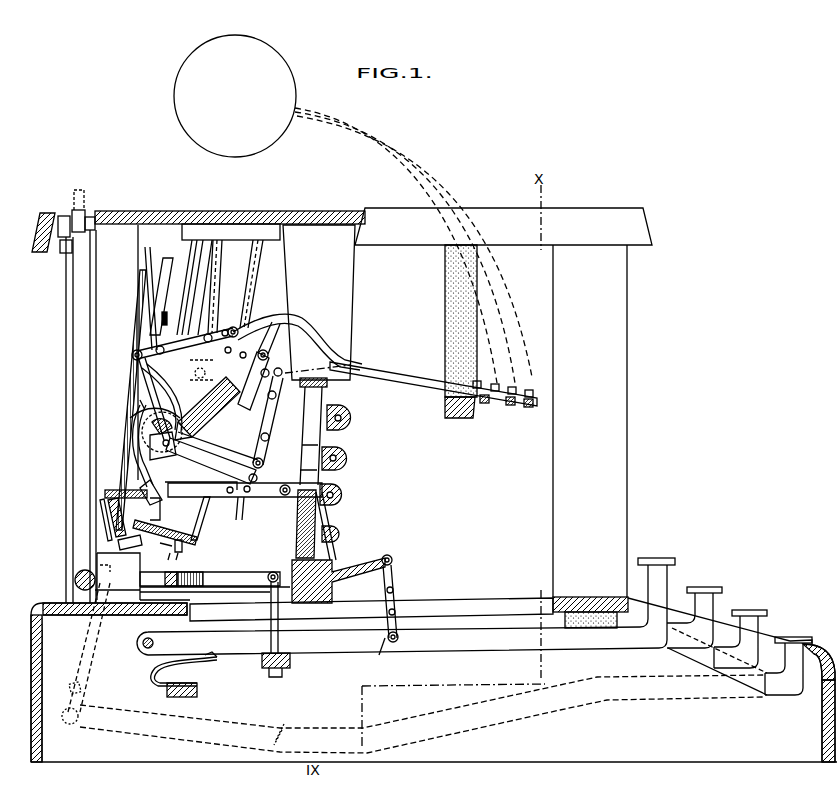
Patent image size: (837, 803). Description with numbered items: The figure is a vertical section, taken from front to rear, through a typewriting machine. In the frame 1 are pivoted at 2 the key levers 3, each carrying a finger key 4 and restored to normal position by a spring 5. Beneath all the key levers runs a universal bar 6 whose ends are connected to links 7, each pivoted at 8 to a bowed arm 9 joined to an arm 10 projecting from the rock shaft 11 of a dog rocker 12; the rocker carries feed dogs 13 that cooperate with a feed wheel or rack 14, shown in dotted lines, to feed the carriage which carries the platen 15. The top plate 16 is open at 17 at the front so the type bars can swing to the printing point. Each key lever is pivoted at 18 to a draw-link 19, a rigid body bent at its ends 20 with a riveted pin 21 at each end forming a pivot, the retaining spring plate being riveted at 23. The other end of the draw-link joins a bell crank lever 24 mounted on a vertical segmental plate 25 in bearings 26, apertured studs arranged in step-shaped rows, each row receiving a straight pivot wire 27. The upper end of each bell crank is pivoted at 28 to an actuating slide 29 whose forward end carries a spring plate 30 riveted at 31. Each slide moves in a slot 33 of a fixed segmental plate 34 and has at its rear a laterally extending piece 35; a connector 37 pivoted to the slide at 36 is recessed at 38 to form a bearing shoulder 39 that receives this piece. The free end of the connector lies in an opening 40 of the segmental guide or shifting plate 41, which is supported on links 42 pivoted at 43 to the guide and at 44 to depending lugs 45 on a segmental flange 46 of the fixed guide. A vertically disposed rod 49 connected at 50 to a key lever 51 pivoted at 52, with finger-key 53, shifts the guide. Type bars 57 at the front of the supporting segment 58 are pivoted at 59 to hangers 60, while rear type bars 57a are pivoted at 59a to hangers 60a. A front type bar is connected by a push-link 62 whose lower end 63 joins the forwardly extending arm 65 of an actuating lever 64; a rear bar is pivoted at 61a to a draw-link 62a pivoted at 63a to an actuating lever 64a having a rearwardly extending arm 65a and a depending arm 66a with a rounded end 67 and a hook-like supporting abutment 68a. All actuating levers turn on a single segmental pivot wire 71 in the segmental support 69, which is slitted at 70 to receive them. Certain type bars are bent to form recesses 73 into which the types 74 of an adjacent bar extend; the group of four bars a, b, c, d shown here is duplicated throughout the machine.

The frame 1 is at (32, 668).
The pivot 2 is at (143, 650).
The key levers 3 is at (490, 640).
The finger keys 4 is at (660, 558).
The spring 5 is at (194, 668).
The universal bar 6 is at (288, 664).
The links 7 is at (270, 625).
The pivot 8 is at (273, 571).
The bowed arm 9 is at (226, 574).
The arm 10 is at (118, 585).
The rock shaft 11 is at (80, 594).
The dog rocker 12 is at (74, 462).
The feed dogs 13 is at (98, 212).
The feed wheel or rack 14 is at (84, 194).
The platen 15 is at (353, 209).
The top plate 16 is at (318, 212).
The opening 17 is at (503, 402).
The pivot 18 is at (387, 656).
The draw-link 19 is at (398, 596).
The bent ends 20 is at (392, 572).
The pin 21 is at (391, 558).
The rivet 23 is at (386, 590).
The bell crank lever 24 is at (352, 572).
The segmental plate 25 is at (322, 399).
The bearings 26 is at (348, 424).
The pivot wire 27 is at (336, 550).
The pivot 28 is at (298, 515).
The actuating slide 29 is at (262, 498).
The spring plate 30 is at (311, 436).
The rivet end 31 is at (285, 496).
The slot 33 is at (206, 500).
The fixed segmental plate 34 is at (200, 570).
The laterally extending piece 35 is at (162, 506).
The pivot 36 is at (238, 510).
The connector 37 is at (190, 528).
The recess 38 is at (118, 528).
The bearing shoulder 39 is at (108, 502).
The opening 40 is at (104, 494).
The segmental guide or shifting plate 41 is at (102, 508).
The links 42 is at (160, 320).
The pivot 43 is at (186, 325).
The pivot 44 is at (205, 368).
The depending lugs 45 is at (203, 318).
The segmental flange 46 is at (178, 547).
The vertically disposed rod 49 is at (96, 632).
The connection 50 is at (70, 724).
The key lever 51 is at (326, 732).
The pivot 52 is at (276, 732).
The finger-key 53 is at (810, 638).
The type bars 57 is at (305, 352).
The type bars 57a is at (368, 386).
The supporting segment 58 is at (208, 426).
The pivot 59 is at (282, 340).
The pivot 59a is at (270, 318).
The hanger 60 is at (255, 388).
The hanger 60a is at (150, 384).
The pivot 61a is at (245, 326).
The push-link 62 is at (270, 436).
The draw-link 62a is at (222, 332).
The lower end 63 is at (264, 464).
The rear end pivot 63a is at (132, 355).
The actuating lever 64 is at (190, 458).
The actuating lever 64a is at (146, 421).
The forwardly extending arm 65 is at (236, 460).
The rearwardly extending arm 65a is at (143, 362).
The depending arm 66a is at (128, 448).
The rounded end 67 is at (181, 564).
The hook-like supporting abutment 68a is at (156, 398).
The segmental support 69 is at (138, 436).
The slits 70 is at (168, 427).
The segmental pivot wire 71 is at (172, 444).
The recesses 73 is at (485, 405).
The types 74 is at (520, 407).
The type bar a is at (516, 390).
The type bar b is at (499, 387).
The type bar c is at (533, 394).
The type bar d is at (481, 384).